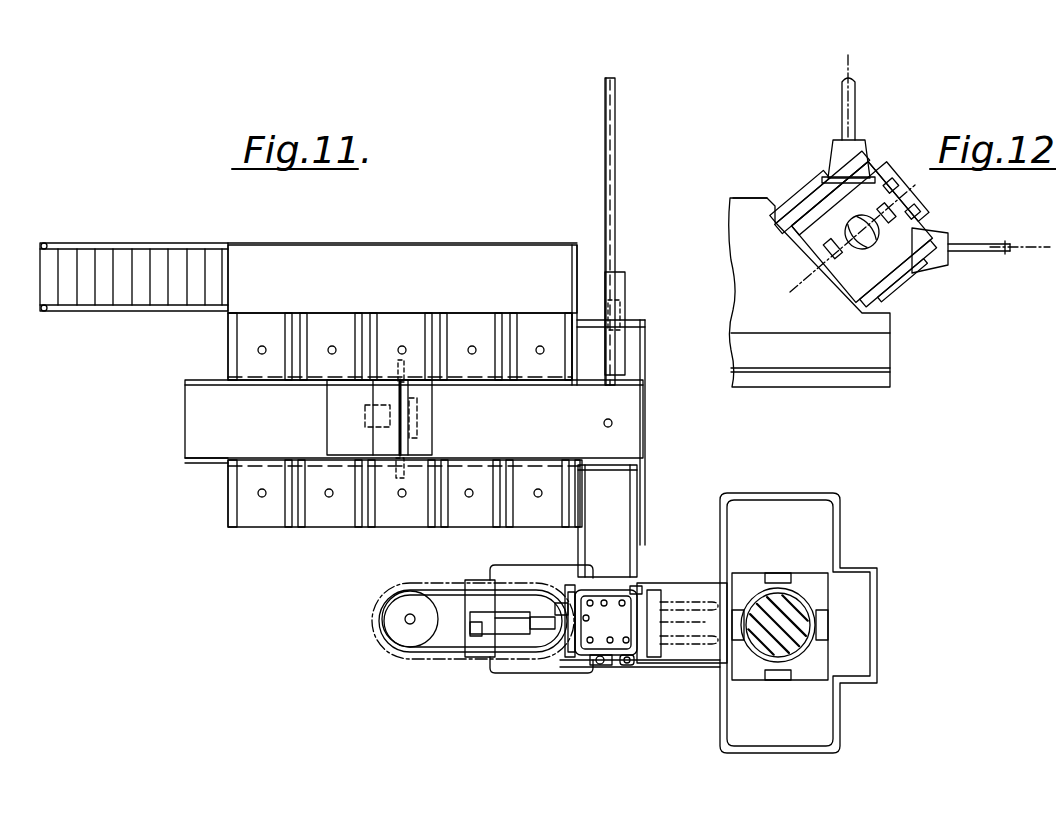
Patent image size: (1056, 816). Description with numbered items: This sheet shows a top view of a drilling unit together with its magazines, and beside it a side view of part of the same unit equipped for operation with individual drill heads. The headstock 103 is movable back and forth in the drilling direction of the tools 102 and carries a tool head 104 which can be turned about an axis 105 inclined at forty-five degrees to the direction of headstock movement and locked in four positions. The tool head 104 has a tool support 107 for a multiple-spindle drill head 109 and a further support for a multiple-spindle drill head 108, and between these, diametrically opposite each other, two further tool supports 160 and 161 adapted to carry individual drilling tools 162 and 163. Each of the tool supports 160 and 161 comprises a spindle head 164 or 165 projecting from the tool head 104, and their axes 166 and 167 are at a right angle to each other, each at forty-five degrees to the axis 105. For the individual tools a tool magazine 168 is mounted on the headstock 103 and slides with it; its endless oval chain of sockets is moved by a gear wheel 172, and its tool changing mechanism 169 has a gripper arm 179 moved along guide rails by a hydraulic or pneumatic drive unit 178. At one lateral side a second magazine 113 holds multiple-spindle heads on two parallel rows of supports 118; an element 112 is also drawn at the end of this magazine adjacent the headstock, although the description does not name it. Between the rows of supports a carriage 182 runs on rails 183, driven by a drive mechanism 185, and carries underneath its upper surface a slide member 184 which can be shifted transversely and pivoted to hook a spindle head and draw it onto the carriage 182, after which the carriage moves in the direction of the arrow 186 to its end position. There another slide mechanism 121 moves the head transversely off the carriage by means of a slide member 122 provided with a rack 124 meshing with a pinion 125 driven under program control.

In FIG. 11, the tools 102 is at (705, 600).
In FIG. 11, the headstock 103 is at (575, 655).
In FIG. 12, the headstock 103 is at (730, 300).
In FIG. 11, the tool head 104 is at (592, 662).
In FIG. 12, the tool head 104 is at (875, 192).
In FIG. 12, the axis 105 is at (800, 290).
In FIG. 12, the tool support 107 is at (893, 278).
In FIG. 11, the multiple-spindle drill head 108 is at (665, 590).
In FIG. 11, the multiple-spindle drill head 109 is at (626, 636).
In FIG. 11, the bracket 112 is at (610, 545).
In FIG. 11, the second magazine 113 is at (445, 305).
In FIG. 11, the supports 118 is at (332, 325).
In FIG. 11, the slide mechanism 121 is at (630, 292).
In FIG. 11, the slide member 122 is at (612, 232).
In FIG. 11, the rack 124 is at (612, 262).
In FIG. 11, the pinion 125 is at (615, 320).
In FIG. 11, the tool support 160 is at (600, 665).
In FIG. 12, the tool support 160 is at (905, 225).
In FIG. 11, the tool support 161 is at (597, 592).
In FIG. 12, the tool support 161 is at (870, 165).
In FIG. 12, the individual drilling tool 162 is at (992, 258).
In FIG. 12, the individual drilling tool 163 is at (858, 97).
In FIG. 11, the spindle head 164 is at (627, 668).
In FIG. 12, the spindle head 164 is at (945, 236).
In FIG. 11, the spindle head 165 is at (632, 588).
In FIG. 12, the spindle head 165 is at (858, 138).
In FIG. 12, the axis 166 is at (1040, 262).
In FIG. 12, the axis 167 is at (852, 62).
In FIG. 11, the tool magazine 168 is at (380, 655).
In FIG. 11, the tool changing mechanism 169 is at (497, 628).
In FIG. 11, the gear wheel 172 is at (395, 610).
In FIG. 11, the drive unit 178 is at (483, 628).
In FIG. 11, the gripper arm 179 is at (552, 608).
In FIG. 11, the carriage 182 is at (340, 420).
In FIG. 11, the rails 183 is at (256, 462).
In FIG. 11, the slide member 184 is at (400, 470).
In FIG. 11, the drive mechanism 185 is at (380, 418).
In FIG. 11, the arrow 186 is at (514, 420).